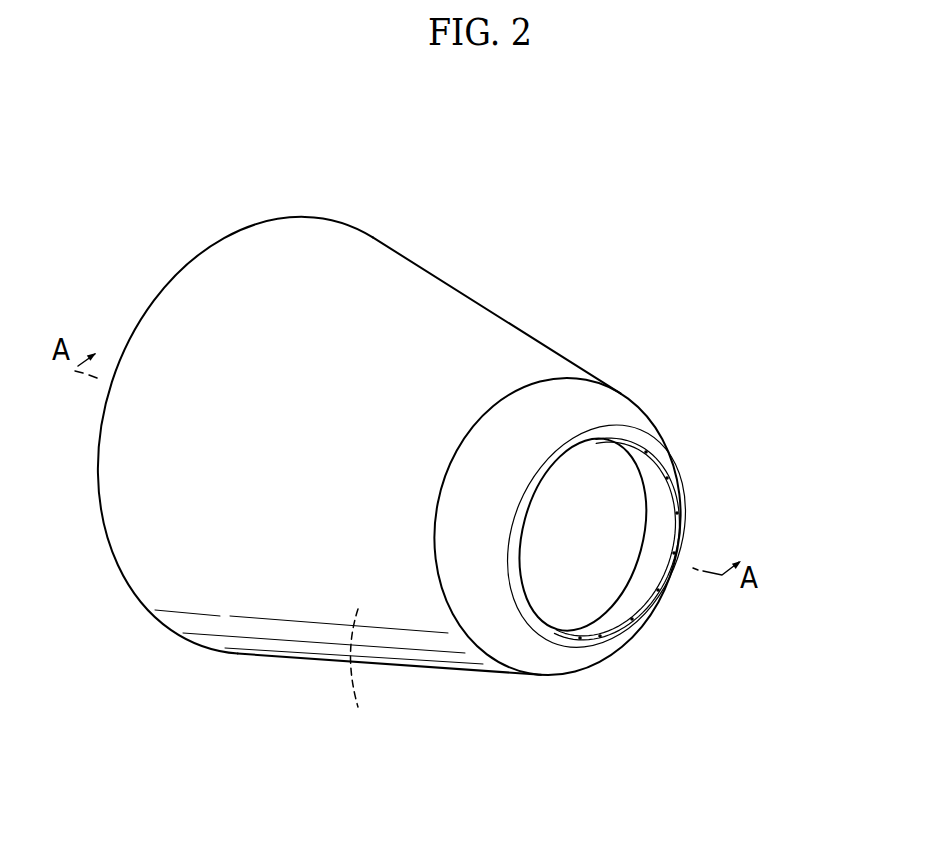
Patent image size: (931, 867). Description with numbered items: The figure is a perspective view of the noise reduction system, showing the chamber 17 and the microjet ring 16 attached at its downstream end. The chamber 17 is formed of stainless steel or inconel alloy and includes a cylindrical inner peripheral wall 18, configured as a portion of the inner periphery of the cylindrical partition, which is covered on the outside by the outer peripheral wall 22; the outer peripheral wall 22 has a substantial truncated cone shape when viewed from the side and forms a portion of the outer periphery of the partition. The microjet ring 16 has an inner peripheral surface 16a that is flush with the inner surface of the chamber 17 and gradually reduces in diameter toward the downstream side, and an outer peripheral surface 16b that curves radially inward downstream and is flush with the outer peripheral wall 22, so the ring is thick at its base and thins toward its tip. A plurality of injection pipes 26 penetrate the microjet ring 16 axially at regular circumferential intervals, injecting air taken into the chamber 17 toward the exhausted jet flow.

The microjet ring 16 is at (610, 477).
The inner peripheral surface 16a is at (653, 528).
The outer peripheral surface 16b is at (586, 382).
The chamber 17 is at (359, 425).
The inner peripheral wall 18 is at (355, 677).
The outer peripheral wall 22 is at (527, 332).
The injection pipes 26 is at (672, 490).